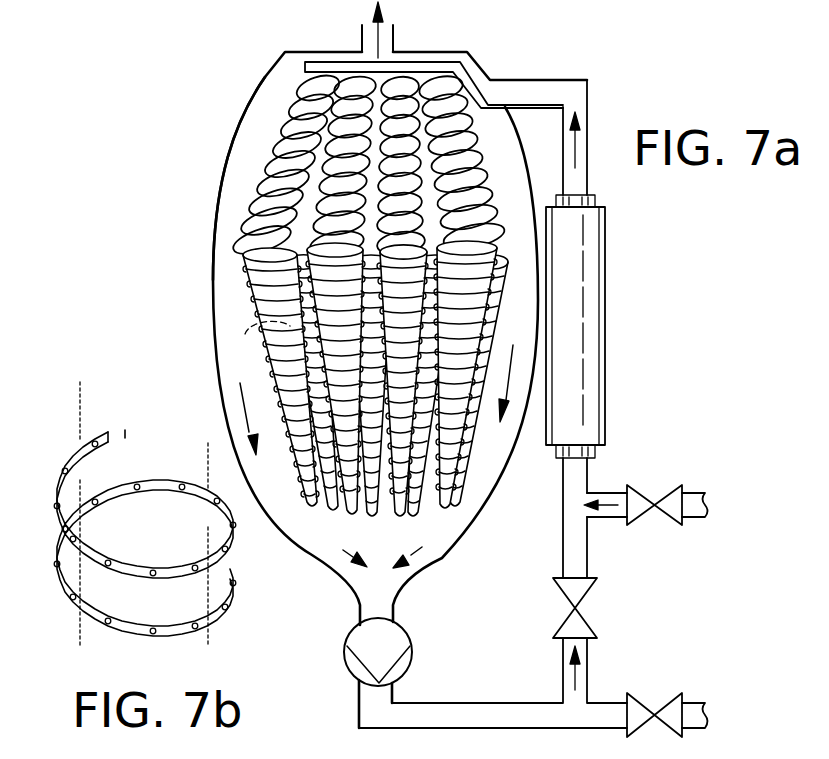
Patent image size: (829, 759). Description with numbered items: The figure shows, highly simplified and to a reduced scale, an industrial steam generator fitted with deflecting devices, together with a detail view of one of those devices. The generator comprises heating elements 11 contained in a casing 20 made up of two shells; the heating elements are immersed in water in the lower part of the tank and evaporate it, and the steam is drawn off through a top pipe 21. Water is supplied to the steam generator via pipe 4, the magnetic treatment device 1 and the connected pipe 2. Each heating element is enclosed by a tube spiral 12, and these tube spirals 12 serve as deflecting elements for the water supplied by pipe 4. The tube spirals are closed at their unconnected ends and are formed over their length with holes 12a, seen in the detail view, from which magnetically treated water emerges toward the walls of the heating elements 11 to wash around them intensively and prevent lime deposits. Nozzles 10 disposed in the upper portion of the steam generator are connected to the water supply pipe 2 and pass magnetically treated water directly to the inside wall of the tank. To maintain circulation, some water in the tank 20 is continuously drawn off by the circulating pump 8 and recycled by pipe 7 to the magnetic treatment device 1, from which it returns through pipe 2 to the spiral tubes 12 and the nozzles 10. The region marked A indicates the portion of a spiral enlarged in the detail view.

In FIG. 7A, the magnetic treatment device 1 is at (588, 278).
In FIG. 7A, the pipe 2 is at (588, 106).
In FIG. 7A, the pipe 4 is at (702, 492).
In FIG. 7A, the pipe 7 is at (481, 710).
In FIG. 7A, the circulating pump 8 is at (355, 637).
In FIG. 7A, the nozzles 10 is at (279, 93).
In FIG. 7A, the heating elements 11 is at (262, 272).
In FIG. 7B, the heating elements 11 is at (82, 405).
In FIG. 7A, the tube spirals 12 is at (278, 160).
In FIG. 7B, the tube spirals 12 is at (152, 632).
In FIG. 7A, the holes 12a is at (243, 333).
In FIG. 7B, the holes 12a is at (105, 496).
In FIG. 7A, the casing 20 is at (245, 122).
In FIG. 7A, the top pipe 21 is at (397, 42).
In FIG. 7A, the detail region A is at (236, 343).